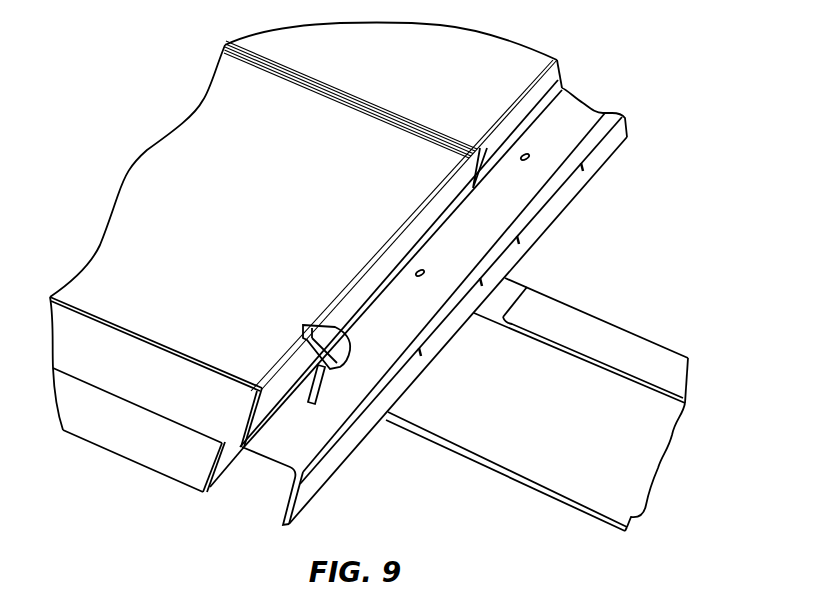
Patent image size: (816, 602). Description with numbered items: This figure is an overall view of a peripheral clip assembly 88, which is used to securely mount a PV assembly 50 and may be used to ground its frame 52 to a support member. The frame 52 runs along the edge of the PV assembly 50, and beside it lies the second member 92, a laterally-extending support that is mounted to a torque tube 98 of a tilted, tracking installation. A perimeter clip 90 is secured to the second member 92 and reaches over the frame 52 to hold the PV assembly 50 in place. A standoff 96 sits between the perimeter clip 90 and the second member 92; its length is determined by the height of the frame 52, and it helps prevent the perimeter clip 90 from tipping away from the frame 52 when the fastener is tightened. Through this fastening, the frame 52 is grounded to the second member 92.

The PV assembly 50 is at (414, 87).
The frame 52 is at (423, 213).
The peripheral clip assembly 88 is at (358, 334).
The perimeter clip 90 is at (300, 338).
The second member 92 is at (318, 473).
The standoff 96 is at (325, 392).
The torque tube 98 is at (561, 440).